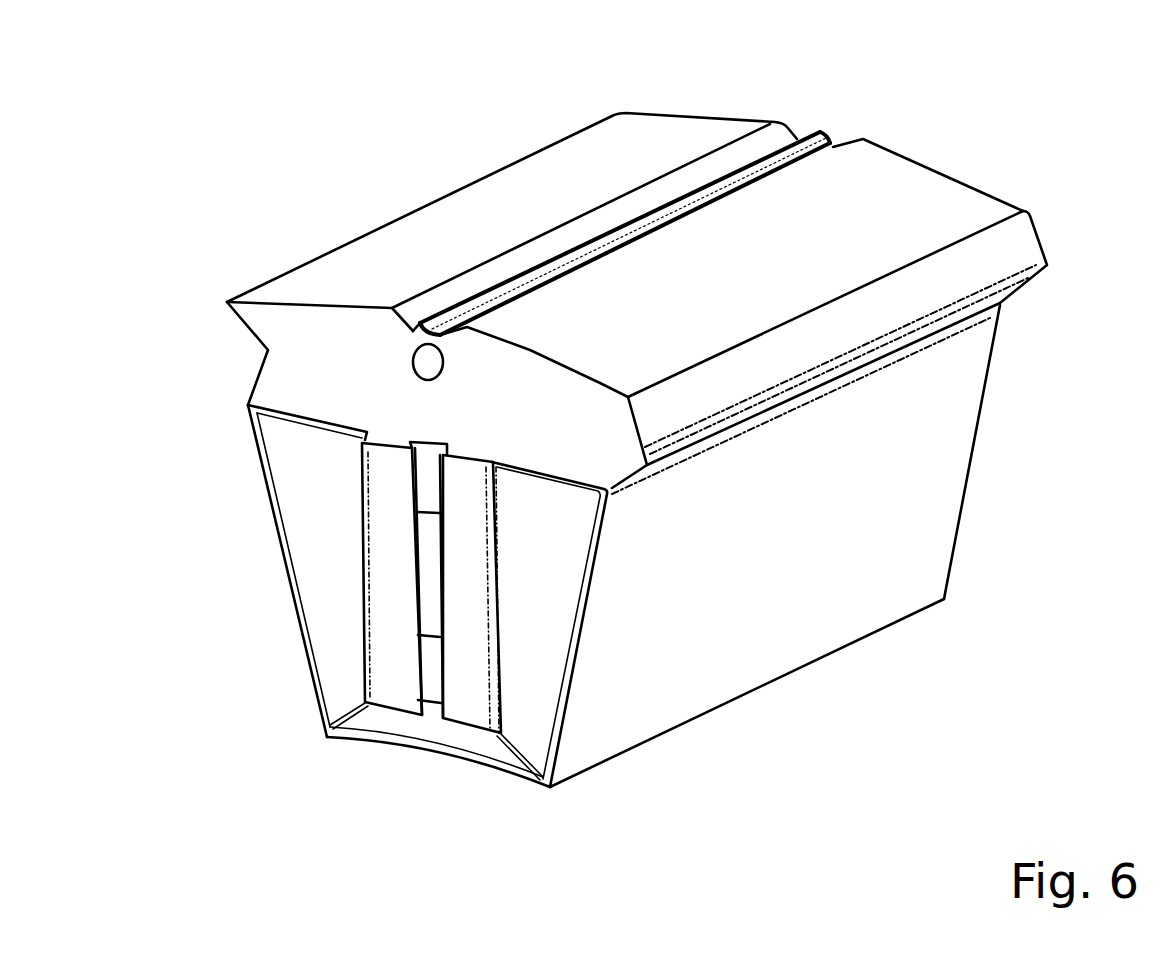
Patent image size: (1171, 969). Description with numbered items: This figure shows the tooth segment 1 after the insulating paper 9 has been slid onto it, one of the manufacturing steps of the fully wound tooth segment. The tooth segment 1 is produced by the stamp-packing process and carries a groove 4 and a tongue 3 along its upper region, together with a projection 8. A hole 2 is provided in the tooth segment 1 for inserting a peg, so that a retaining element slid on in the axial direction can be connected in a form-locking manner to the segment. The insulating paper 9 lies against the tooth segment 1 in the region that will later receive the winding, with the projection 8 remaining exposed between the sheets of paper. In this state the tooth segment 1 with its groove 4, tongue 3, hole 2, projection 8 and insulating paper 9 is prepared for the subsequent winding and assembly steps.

The tooth segment 1 is at (782, 230).
The hole 2 is at (434, 366).
The tongue 3 is at (1008, 250).
The groove 4 is at (258, 377).
The projection 8 is at (432, 667).
The insulating paper 9 is at (321, 535).